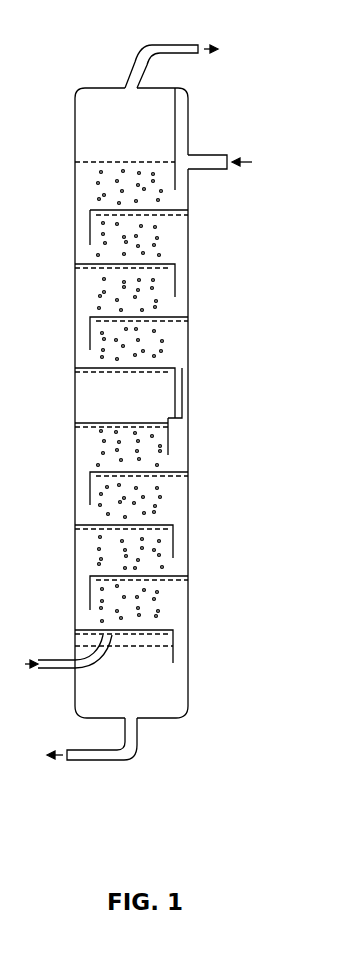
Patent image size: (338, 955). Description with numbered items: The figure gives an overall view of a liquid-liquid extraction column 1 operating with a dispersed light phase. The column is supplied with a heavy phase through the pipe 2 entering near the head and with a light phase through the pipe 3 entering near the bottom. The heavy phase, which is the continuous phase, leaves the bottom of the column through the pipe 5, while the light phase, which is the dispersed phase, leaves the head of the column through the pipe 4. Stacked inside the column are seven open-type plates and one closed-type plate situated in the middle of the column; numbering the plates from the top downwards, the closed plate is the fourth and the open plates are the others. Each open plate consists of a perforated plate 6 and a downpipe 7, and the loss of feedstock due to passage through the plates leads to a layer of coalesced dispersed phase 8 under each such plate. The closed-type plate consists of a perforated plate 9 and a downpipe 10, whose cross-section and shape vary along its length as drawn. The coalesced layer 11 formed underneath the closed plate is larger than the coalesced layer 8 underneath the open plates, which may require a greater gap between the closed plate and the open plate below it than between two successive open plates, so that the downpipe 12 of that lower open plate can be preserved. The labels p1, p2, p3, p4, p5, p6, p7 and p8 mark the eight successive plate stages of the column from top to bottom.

The extraction column 1 is at (75, 115).
The pipe 2 is at (215, 168).
The pipe 3 is at (53, 668).
The pipe 4 is at (138, 56).
The pipe 5 is at (90, 762).
The perforated plate 6 is at (105, 209).
The downpipe 7 is at (90, 228).
The layer of coalesced dispersed phase 8 is at (103, 274).
The perforated plate 9 is at (80, 367).
The downpipe 10 is at (183, 386).
The coalesced layer 11 is at (80, 428).
The downpipe 12 is at (170, 440).
The pressure point p1 is at (188, 172).
The pressure point p2 is at (125, 228).
The pressure point p3 is at (188, 290).
The pressure point p4 is at (124, 350).
The pressure point p5 is at (188, 473).
The pressure point p6 is at (124, 527).
The pressure point p7 is at (188, 588).
The pressure point p8 is at (140, 652).